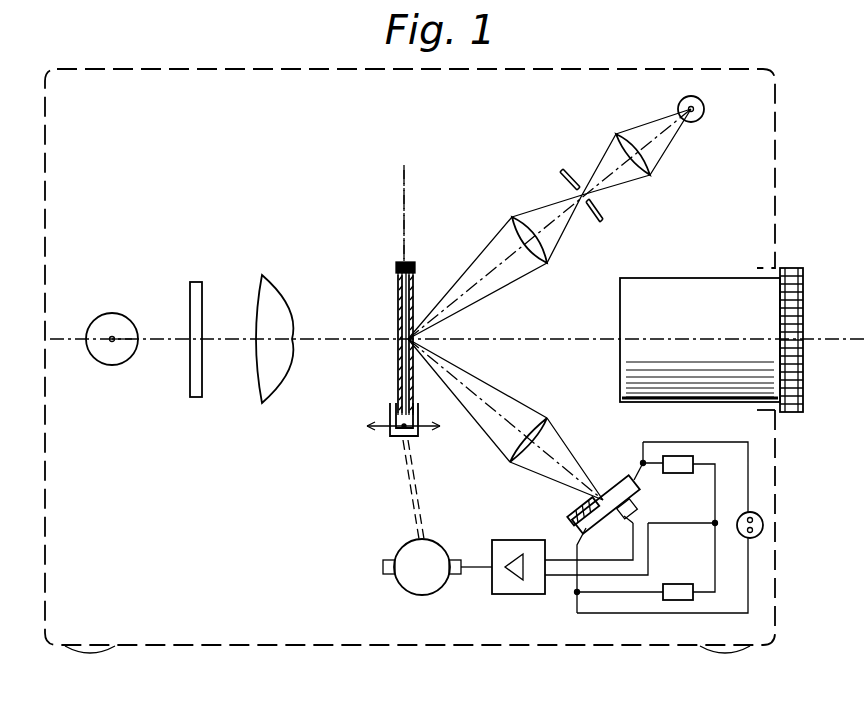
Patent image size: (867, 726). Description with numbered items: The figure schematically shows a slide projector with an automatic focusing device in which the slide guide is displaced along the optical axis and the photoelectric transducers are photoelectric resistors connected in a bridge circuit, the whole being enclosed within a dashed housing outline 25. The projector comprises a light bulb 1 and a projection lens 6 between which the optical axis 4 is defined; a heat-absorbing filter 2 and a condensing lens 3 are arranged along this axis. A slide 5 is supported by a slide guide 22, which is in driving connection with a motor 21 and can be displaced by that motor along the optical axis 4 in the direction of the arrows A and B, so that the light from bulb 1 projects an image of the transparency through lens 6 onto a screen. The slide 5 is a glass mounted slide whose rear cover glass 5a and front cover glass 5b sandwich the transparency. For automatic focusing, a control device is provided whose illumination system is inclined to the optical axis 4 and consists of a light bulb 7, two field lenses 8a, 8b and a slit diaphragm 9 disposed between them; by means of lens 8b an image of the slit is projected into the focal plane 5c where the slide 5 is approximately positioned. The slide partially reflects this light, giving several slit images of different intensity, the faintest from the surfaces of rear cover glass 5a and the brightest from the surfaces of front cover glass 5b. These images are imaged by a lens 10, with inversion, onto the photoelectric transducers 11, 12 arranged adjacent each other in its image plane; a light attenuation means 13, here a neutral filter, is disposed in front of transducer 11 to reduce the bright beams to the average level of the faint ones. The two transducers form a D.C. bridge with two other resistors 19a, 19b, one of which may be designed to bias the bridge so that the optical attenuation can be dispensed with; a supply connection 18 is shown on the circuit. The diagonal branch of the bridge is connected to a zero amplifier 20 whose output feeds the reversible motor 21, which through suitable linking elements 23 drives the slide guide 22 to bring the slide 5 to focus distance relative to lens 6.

The light bulb 1 is at (114, 365).
The heat-absorbing filter 2 is at (190, 390).
The condensing lens 3 is at (256, 397).
The optical axis 4 is at (506, 344).
The slide 5 is at (398, 380).
The rear cover glass 5a is at (398, 300).
The front cover glass 5b is at (411, 292).
The focal plane 5c is at (403, 210).
The projection lens 6 is at (703, 292).
The light bulb 7 is at (700, 118).
The field lens 8a is at (653, 176).
The field lens 8b is at (515, 220).
The slit diaphragm 9 is at (570, 192).
The lens 10 is at (512, 460).
The photoelectric transducer 11 is at (619, 524).
The photoelectric transducer 12 is at (622, 483).
The light attenuation means 13 is at (590, 517).
The power supply socket 18 is at (763, 525).
The resistor 19a is at (683, 584).
The resistor 19b is at (683, 474).
The zero amplifier 20 is at (518, 595).
The reversible motor 21 is at (428, 590).
The slide guide 22 is at (400, 438).
The linking elements 23 is at (408, 513).
The housing 25 is at (637, 636).